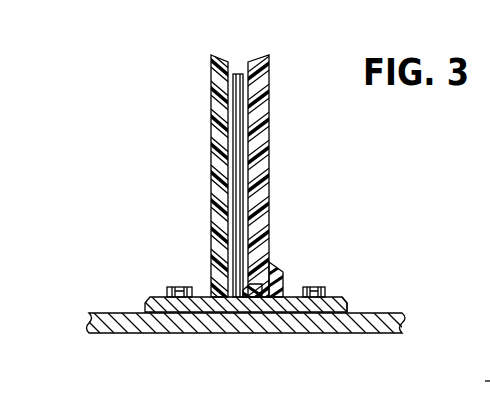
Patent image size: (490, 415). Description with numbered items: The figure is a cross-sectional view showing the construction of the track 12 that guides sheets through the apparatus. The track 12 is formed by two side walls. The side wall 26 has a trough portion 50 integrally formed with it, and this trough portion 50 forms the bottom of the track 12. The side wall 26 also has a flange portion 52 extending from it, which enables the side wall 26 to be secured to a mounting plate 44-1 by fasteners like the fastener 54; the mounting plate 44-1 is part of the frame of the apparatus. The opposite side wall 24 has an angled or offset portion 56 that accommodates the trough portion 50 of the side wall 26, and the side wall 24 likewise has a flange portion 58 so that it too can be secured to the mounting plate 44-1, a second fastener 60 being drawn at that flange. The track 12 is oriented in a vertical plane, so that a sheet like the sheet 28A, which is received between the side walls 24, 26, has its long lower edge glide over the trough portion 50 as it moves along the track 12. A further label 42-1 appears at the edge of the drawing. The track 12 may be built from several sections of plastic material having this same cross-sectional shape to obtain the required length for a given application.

The track 12 is at (157, 88).
The side wall 24 is at (270, 163).
The side wall 26 is at (210, 160).
The sheet 28A is at (238, 72).
The trough portion 50 is at (253, 298).
The flange portion 52 is at (146, 302).
The fastener 54 is at (172, 288).
The angled or offset portion 56 is at (276, 268).
The flange portion 58 is at (348, 303).
The fastener 60 is at (320, 288).
The mounting plate 44-1 is at (180, 334).
The heat sink section 42-1 is at (464, 381).